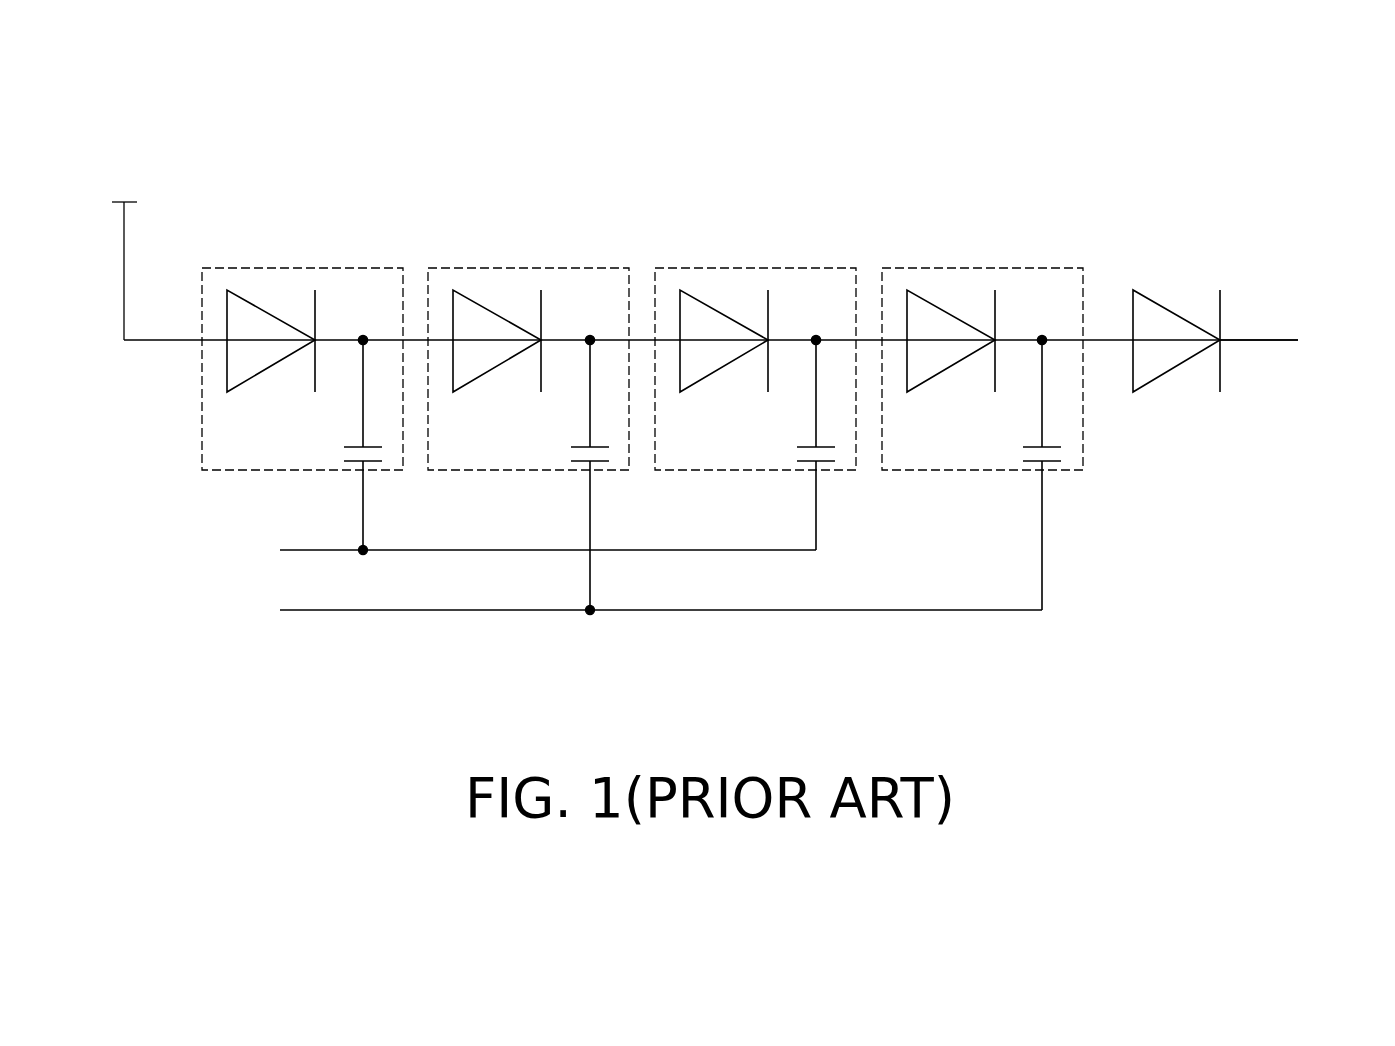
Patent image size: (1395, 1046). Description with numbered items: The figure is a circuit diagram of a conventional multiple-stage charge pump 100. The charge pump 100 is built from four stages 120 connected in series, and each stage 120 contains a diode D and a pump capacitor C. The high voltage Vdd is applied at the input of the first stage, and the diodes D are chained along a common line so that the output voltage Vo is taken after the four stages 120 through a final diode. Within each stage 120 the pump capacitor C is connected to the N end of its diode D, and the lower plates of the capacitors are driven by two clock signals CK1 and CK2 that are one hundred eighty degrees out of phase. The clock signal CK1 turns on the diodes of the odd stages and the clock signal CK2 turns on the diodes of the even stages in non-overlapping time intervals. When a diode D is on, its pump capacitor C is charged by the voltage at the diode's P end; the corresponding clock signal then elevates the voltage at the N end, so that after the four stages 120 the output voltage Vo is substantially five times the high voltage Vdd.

The conventional multiple-stage charge pump 100 is at (1343, 105).
The stage 120 is at (342, 268).
The diode D is at (275, 317).
The pump capacitor C is at (687, 473).
The high voltage Vdd is at (157, 252).
The output voltage Vo is at (1285, 339).
The clock signal CK1 is at (514, 549).
The clock signal CK2 is at (627, 610).